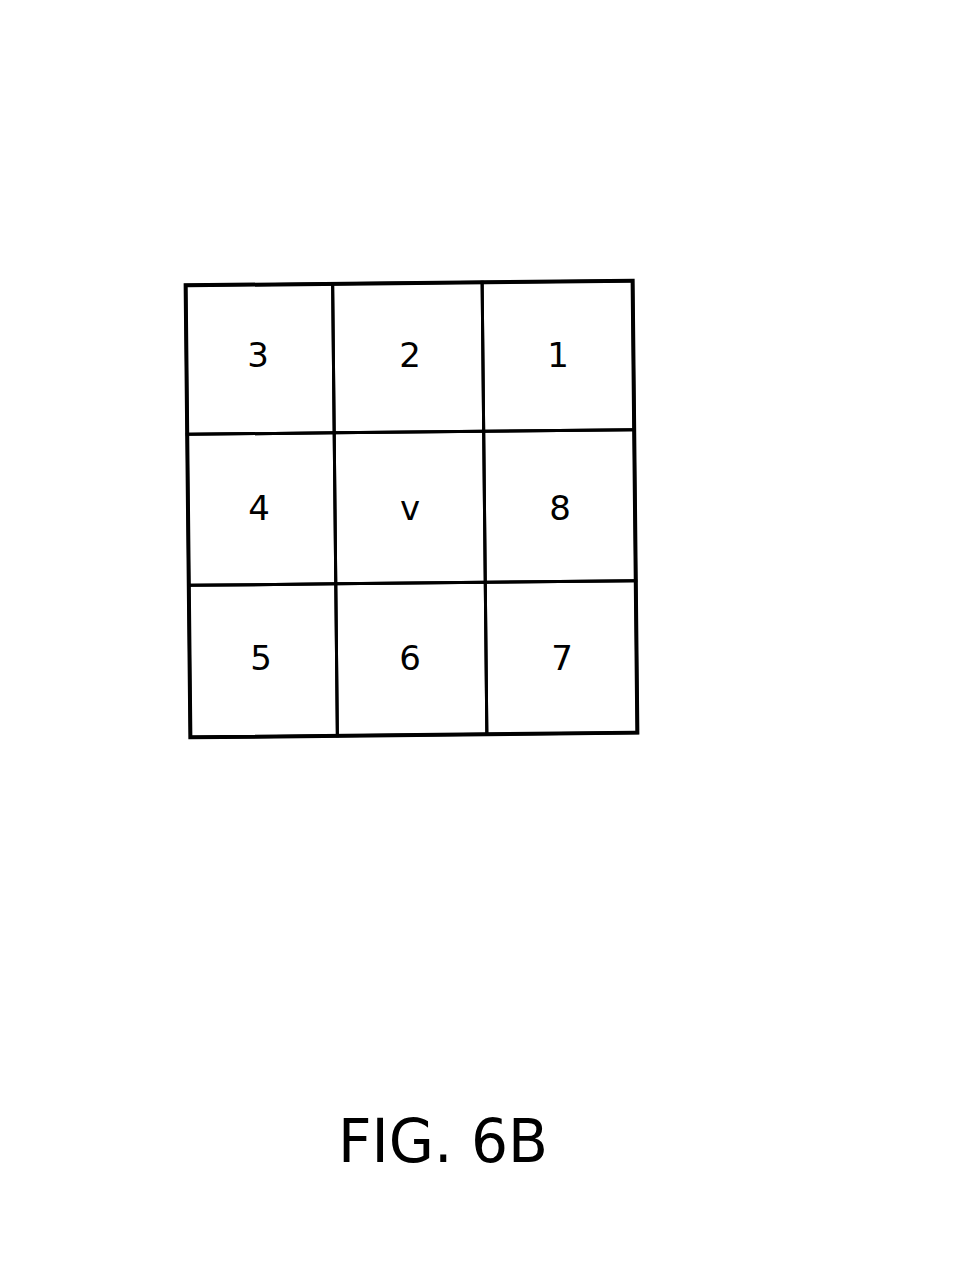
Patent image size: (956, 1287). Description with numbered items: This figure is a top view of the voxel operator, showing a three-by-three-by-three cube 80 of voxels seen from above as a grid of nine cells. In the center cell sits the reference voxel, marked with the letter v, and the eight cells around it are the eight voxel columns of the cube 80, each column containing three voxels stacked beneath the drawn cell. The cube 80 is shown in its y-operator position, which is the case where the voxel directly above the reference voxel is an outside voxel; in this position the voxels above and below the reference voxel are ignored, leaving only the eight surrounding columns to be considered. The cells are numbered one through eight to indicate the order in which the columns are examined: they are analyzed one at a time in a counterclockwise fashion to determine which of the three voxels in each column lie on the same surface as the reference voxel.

The three-by-three-by-three cube 80 is at (720, 131).